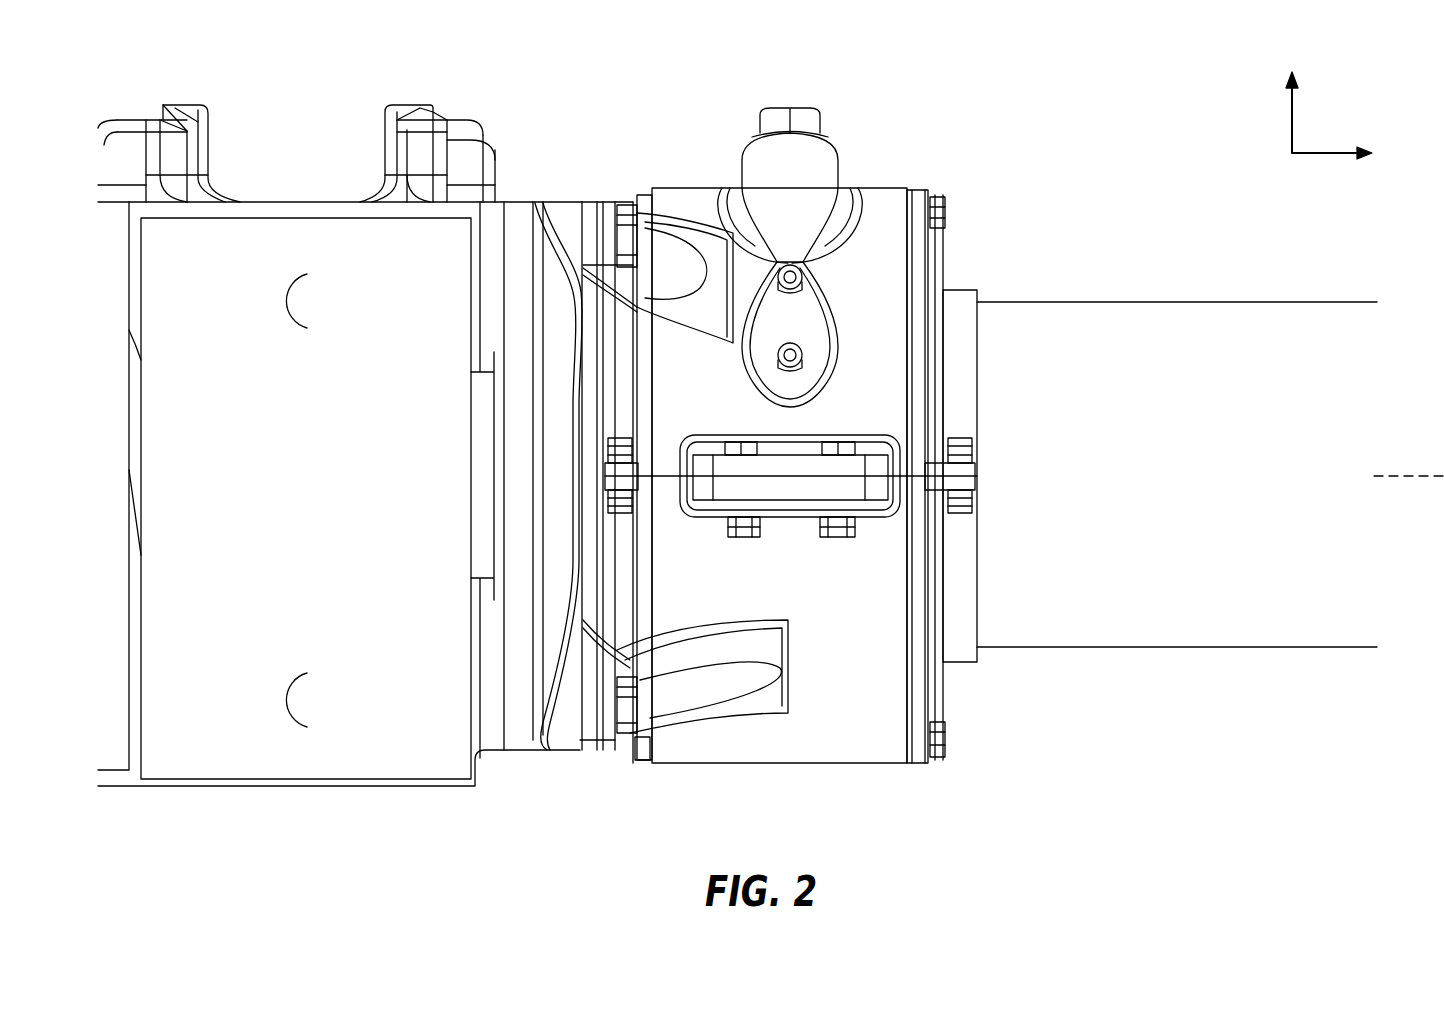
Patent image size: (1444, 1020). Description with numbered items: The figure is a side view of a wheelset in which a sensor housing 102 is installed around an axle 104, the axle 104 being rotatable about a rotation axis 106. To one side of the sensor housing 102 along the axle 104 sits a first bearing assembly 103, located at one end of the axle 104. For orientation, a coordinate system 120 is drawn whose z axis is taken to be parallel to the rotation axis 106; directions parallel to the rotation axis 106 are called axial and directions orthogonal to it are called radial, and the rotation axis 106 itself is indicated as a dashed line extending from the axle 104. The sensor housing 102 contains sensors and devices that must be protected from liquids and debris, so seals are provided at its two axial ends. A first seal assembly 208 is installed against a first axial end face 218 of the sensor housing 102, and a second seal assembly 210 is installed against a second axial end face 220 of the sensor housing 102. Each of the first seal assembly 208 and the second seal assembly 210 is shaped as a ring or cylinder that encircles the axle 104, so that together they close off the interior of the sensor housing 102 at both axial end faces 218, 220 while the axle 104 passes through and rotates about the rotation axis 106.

The sensor housing 102 is at (905, 76).
The first bearing assembly 103 is at (485, 76).
The axle 104 is at (1190, 302).
The rotation axis 106 is at (1415, 476).
The coordinate system 120 is at (1360, 78).
The first seal assembly 208 is at (980, 76).
The second seal assembly 210 is at (678, 76).
The first axial end face 218 is at (900, 210).
The second axial end face 220 is at (678, 210).